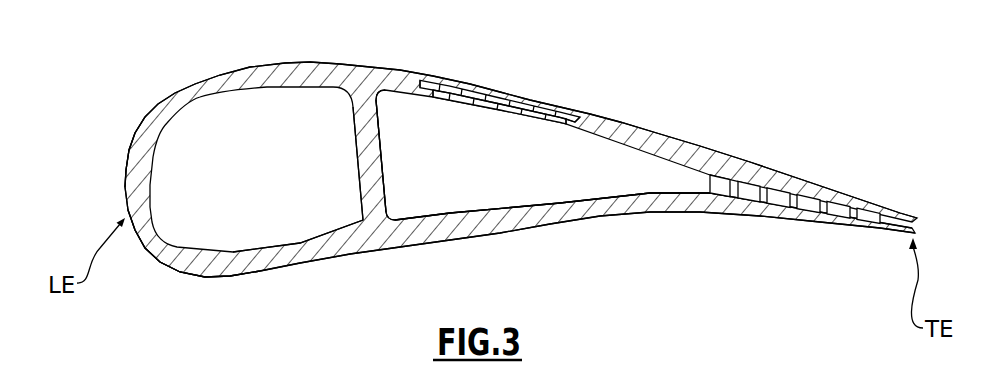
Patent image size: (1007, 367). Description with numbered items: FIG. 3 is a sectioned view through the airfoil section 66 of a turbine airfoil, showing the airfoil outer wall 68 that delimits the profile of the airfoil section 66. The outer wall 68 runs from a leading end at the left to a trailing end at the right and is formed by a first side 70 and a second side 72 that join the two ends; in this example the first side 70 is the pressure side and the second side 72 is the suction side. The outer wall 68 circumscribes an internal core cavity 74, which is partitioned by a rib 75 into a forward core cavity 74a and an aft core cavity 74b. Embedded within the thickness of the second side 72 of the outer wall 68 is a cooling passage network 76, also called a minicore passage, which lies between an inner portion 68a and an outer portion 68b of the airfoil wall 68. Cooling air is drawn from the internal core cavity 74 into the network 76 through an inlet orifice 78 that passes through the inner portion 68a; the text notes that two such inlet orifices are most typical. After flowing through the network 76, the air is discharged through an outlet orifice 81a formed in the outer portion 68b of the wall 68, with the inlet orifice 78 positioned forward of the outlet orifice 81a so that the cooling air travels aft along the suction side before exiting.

The airfoil section 66 is at (248, 282).
The airfoil outer wall 68 is at (287, 70).
The inner portion of the airfoil outer wall 68a is at (508, 113).
The outer portion of the airfoil outer wall 68b is at (547, 102).
The first side 70 is at (412, 233).
The second side 72 is at (383, 67).
The internal core cavity 74 is at (584, 176).
The forward core cavity 74a is at (256, 169).
The aft core cavity 74b is at (543, 155).
The rib 75 is at (355, 128).
The cooling passage network 76 is at (517, 86).
The inlet orifice 78 is at (433, 98).
The outlet orifice 81a is at (585, 110).